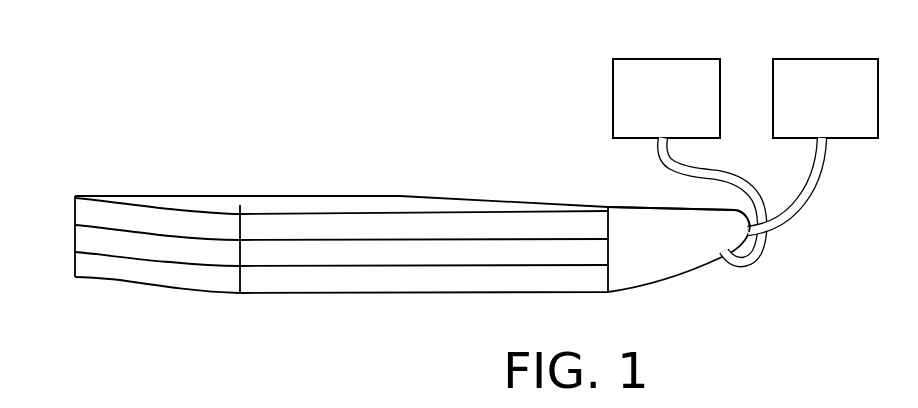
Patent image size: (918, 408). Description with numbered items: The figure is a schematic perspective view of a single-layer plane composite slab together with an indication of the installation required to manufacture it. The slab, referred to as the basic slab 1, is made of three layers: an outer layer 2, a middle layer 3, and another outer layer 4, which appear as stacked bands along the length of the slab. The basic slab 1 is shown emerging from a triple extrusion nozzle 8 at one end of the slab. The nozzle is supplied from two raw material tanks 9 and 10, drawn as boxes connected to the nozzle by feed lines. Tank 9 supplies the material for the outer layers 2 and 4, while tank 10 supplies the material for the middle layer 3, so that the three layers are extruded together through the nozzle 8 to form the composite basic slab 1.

The basic slab 1 is at (165, 307).
The outer layer 2 is at (82, 209).
The middle layer 3 is at (82, 241).
The outer layer 4 is at (85, 262).
The triple extrusion nozzle 8 is at (608, 208).
The raw material tank 9 is at (665, 80).
The raw material tank 10 is at (837, 80).